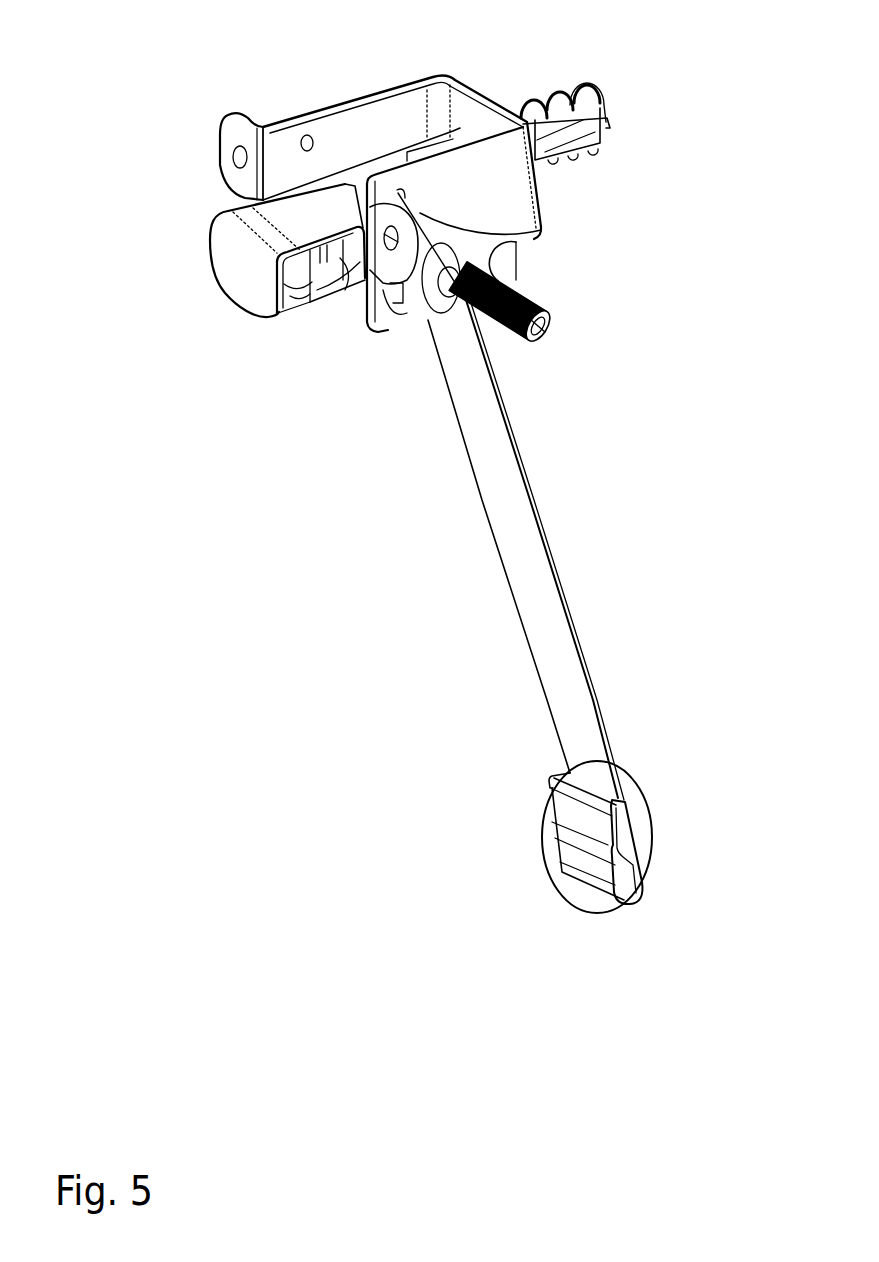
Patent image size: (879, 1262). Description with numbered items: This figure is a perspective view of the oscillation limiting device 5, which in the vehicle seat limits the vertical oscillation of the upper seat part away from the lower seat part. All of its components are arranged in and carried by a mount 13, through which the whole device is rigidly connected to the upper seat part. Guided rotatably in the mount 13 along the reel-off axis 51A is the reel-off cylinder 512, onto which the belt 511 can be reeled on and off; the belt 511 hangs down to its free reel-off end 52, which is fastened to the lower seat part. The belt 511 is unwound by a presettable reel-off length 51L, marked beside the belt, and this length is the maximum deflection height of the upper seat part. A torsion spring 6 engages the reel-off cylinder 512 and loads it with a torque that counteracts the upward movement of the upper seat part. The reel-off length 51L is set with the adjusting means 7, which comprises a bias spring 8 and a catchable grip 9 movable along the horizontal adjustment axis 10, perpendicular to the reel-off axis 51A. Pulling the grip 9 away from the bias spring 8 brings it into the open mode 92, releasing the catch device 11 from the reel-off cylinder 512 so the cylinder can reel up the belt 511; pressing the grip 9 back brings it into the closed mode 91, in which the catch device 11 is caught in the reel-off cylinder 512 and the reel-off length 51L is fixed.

The oscillation limiting device 5 is at (444, 459).
The torsion spring 6 is at (540, 320).
The adjusting means 7 is at (565, 85).
The bias spring 8 is at (560, 114).
The grip 9 is at (233, 213).
The adjustment axis 10 is at (135, 255).
The catch device 11 is at (537, 237).
The mount 13 is at (512, 190).
The reel-off axis 51A is at (122, 85).
The reel-off length 51L is at (620, 802).
The reel-off end 52 is at (630, 842).
The closed mode 91 is at (302, 282).
The open mode 92 is at (228, 262).
The belt 511 is at (518, 498).
The reel-off cylinder 512 is at (353, 253).